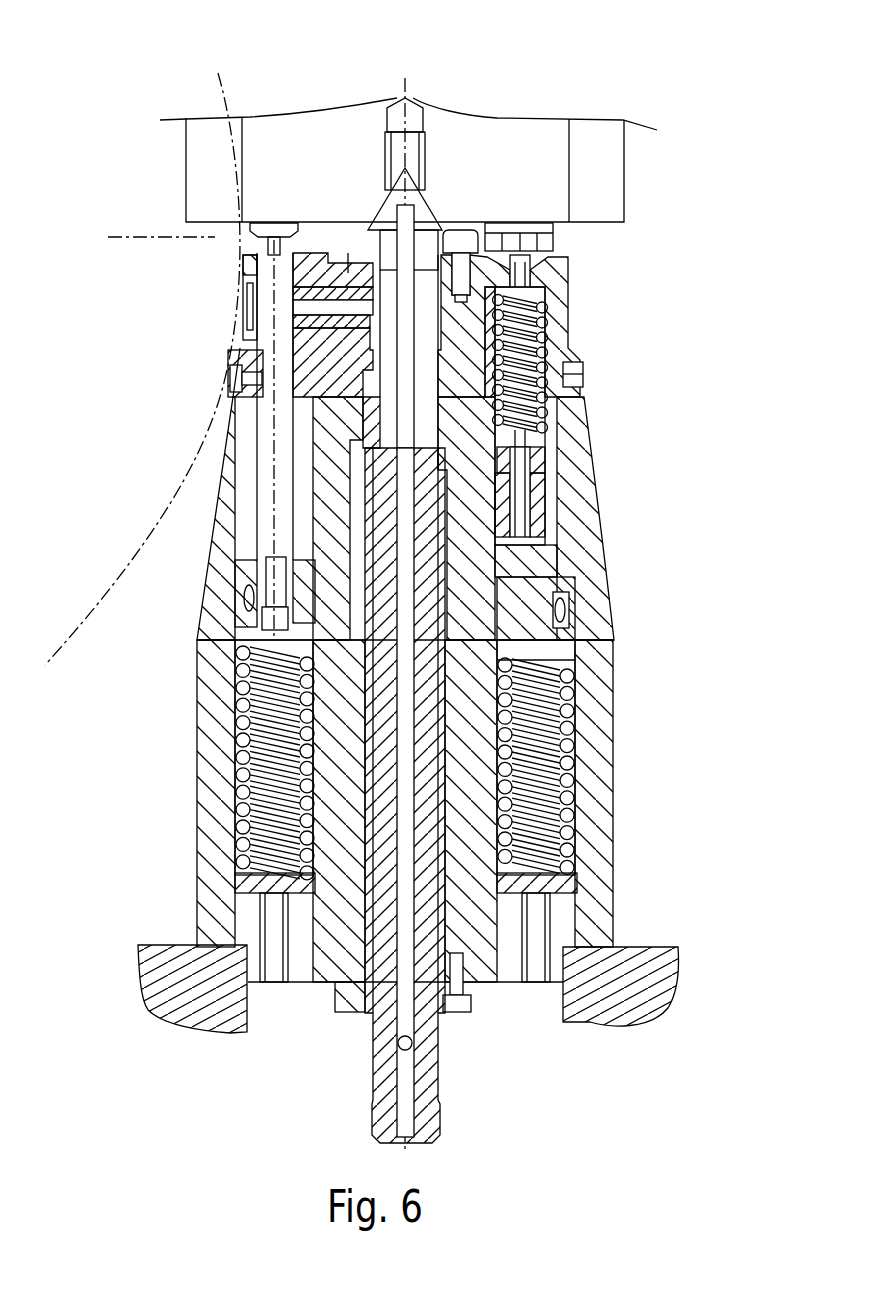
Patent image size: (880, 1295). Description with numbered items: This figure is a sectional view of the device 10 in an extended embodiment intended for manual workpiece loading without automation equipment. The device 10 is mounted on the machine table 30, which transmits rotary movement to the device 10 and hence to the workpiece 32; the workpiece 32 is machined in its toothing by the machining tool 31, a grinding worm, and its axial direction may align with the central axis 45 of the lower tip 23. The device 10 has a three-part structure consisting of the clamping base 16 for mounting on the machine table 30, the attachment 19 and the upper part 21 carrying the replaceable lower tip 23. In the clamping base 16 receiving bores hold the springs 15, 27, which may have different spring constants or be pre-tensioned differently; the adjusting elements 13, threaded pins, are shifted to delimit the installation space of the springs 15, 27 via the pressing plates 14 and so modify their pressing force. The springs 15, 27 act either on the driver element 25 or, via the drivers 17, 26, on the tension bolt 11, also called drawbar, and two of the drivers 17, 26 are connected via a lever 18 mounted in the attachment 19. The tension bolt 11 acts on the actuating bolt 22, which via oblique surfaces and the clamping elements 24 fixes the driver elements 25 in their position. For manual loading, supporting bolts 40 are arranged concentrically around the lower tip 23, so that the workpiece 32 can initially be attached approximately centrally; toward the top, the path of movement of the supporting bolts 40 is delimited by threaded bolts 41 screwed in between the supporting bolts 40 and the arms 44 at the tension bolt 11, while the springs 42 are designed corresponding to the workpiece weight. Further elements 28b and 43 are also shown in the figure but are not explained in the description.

The device 10 is at (684, 791).
The tension bolt 11 is at (440, 1098).
The adjusting elements 13 is at (280, 920).
The pressing plates 14 is at (250, 882).
The spring 15 is at (575, 765).
The clamping base 16 is at (595, 900).
The driver 17 is at (530, 607).
The lever 18 is at (565, 617).
The attachment 19 is at (575, 525).
The upper part 21 is at (565, 302).
The actuating bolt 22 is at (370, 363).
The lower tip 23 is at (430, 218).
The clamping elements 24 is at (317, 318).
The driver element 25 is at (272, 275).
The driver 26 is at (240, 572).
The spring 27 is at (240, 780).
The fastening screw 28b is at (247, 237).
The machine table 30 is at (165, 990).
The machining tool 31 is at (58, 648).
The workpiece 32 is at (606, 182).
The supporting bolts 40 is at (540, 234).
The threaded bolts 41 is at (522, 273).
The springs 42 is at (547, 338).
The spring retainer 43 is at (535, 487).
The arms 44 is at (540, 555).
The central axis 45 is at (405, 78).